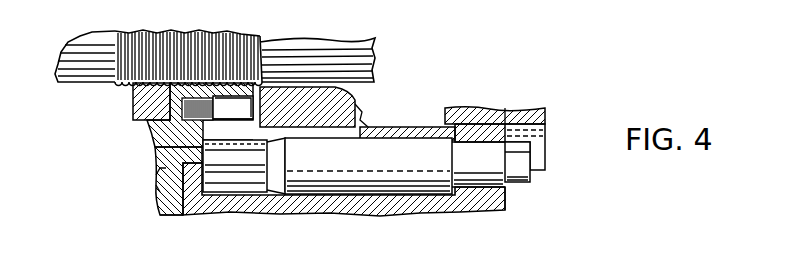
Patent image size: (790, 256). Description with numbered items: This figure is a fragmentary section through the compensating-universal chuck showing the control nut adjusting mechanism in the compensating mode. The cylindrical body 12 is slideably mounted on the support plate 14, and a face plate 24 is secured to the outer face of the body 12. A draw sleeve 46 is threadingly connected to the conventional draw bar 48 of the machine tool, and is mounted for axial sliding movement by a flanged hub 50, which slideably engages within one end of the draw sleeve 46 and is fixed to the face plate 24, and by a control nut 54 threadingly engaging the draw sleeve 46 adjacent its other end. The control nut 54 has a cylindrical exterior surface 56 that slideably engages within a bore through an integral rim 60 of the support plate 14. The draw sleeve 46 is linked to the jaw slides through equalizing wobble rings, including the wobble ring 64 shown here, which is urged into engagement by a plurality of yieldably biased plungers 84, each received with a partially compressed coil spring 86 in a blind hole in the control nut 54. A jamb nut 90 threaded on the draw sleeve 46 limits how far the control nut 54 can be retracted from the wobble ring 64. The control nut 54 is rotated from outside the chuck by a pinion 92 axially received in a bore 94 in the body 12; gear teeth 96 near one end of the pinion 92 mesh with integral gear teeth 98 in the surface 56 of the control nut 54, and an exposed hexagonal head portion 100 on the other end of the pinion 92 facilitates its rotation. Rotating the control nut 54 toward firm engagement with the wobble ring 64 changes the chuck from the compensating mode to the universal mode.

The cylindrical body 12 is at (392, 213).
The support plate 14 is at (158, 205).
The face plate 24 is at (508, 206).
The draw sleeve 46 is at (337, 48).
The draw bar 48 is at (81, 87).
The flanged hub 50 is at (545, 110).
The control nut 54 is at (150, 140).
The cylindrical exterior surface 56 is at (160, 168).
The integral rim 60 is at (150, 183).
The wobble ring 64 is at (357, 99).
The plunger 84 is at (217, 108).
The coil spring 86 is at (152, 128).
The jamb nut 90 is at (138, 105).
The pinion 92 is at (395, 166).
The bore 94 is at (425, 196).
The gear teeth 96 is at (257, 161).
The integral gear teeth 98 is at (226, 132).
The hexagonal head portion 100 is at (528, 178).